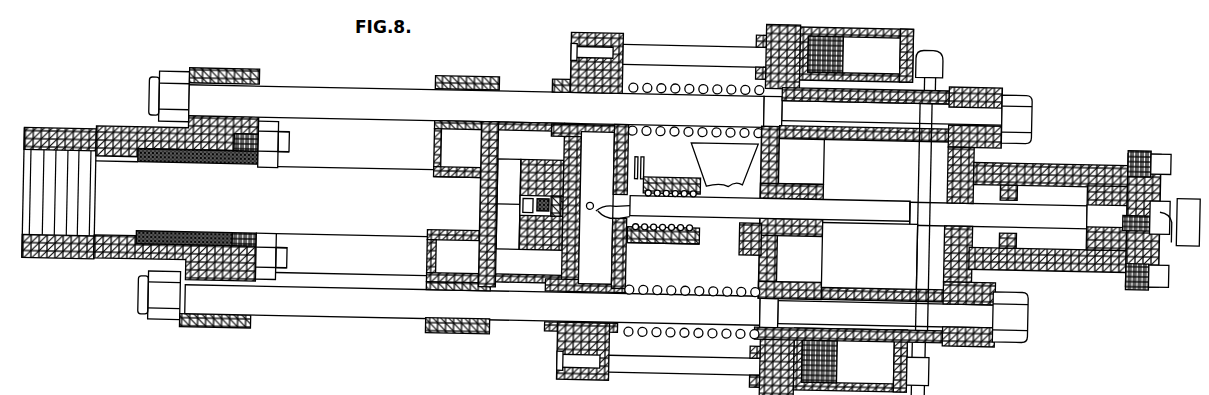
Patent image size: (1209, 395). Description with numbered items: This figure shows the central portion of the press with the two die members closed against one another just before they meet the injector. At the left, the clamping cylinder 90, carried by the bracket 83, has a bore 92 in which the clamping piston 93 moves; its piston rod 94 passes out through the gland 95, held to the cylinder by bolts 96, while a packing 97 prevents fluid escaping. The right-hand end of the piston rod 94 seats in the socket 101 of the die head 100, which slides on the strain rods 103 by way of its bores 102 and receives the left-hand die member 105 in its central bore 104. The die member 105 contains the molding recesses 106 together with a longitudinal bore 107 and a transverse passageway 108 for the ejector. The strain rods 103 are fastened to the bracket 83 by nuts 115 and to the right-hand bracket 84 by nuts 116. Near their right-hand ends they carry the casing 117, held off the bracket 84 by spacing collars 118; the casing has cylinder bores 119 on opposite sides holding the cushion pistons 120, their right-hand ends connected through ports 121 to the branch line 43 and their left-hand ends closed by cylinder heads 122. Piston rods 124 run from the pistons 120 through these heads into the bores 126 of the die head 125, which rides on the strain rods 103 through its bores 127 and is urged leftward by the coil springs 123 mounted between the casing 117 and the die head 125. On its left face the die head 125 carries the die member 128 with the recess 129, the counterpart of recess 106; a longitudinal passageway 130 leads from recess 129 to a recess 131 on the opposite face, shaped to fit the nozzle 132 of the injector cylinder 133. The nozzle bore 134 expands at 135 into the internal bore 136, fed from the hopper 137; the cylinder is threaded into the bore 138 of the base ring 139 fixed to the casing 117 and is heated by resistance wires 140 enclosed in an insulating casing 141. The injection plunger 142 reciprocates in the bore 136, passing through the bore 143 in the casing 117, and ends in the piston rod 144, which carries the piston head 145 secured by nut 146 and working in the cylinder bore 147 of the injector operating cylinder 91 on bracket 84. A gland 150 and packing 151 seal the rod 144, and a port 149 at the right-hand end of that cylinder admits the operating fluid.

The clamping cylinder 90 is at (38, 133).
The clamping piston 93 is at (62, 153).
The bore 92 is at (101, 152).
The piston rod 94 is at (112, 162).
The packing 97 is at (187, 165).
The gland 95 is at (257, 165).
The bolts 96 is at (288, 142).
The nuts 115 is at (170, 74).
The bracket 83 is at (212, 70).
The strain rods 103 is at (337, 92).
The die head 100 is at (465, 73).
The bores 102 is at (433, 119).
The die member 105 is at (480, 160).
The socket 101 is at (445, 176).
The central bore 104 is at (480, 197).
The longitudinal bore 107 is at (520, 201).
The transverse passageway 108 is at (508, 246).
The die member 128 is at (542, 246).
The recesses 106 is at (527, 193).
The recess 129 is at (543, 193).
The longitudinal passageway 130 is at (556, 190).
The bores 127 is at (568, 79).
The die head 125 is at (568, 29).
The bores 126 is at (590, 41).
The piston rods 124 is at (700, 46).
The cylinder heads 122 is at (763, 33).
The cushion pistons 120 is at (842, 44).
The cylinder bores 119 is at (912, 22).
The ports 121 is at (940, 52).
The spacing collars 118 is at (886, 129).
The casing 117 is at (816, 172).
The bore 138 is at (801, 162).
The bore 143 is at (824, 191).
The injection plunger 142 is at (884, 197).
The packing 151 is at (988, 192).
The piston rod 144 is at (910, 212).
The branch line 43 is at (918, 245).
The gland 150 is at (930, 165).
The bracket 84 is at (975, 74).
The nuts 116 is at (1015, 81).
The injector operating cylinder 91 is at (1062, 156).
The cylinder bore 147 is at (1028, 172).
The piston head 145 is at (1110, 170).
The nut 146 is at (1165, 180).
The port 149 is at (1185, 228).
The nozzle 132 is at (603, 185).
The recess 131 is at (586, 197).
The bore 134 is at (602, 206).
The expanded portion 135 is at (612, 215).
The resistance wires 140 is at (636, 160).
The injector cylinder 133 is at (665, 175).
The internal bore 136 is at (662, 236).
The insulating casing 141 is at (640, 237).
The hopper 137 is at (722, 163).
The base ring 139 is at (740, 245).
The coil springs 123 is at (718, 277).